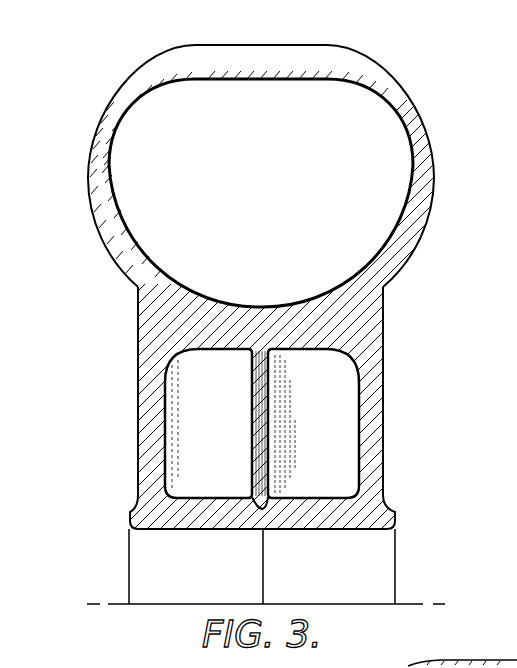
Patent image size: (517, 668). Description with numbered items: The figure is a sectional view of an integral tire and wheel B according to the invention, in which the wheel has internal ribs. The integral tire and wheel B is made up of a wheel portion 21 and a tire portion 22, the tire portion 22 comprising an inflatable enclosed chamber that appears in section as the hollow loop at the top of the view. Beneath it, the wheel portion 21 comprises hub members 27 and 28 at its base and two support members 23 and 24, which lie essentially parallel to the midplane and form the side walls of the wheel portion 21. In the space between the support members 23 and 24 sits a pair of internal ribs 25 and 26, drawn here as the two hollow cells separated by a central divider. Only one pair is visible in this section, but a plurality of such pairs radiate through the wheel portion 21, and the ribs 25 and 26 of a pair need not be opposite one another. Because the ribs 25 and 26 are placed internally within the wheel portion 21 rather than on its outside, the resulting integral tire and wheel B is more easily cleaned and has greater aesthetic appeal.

The wheel portion 21 is at (386, 326).
The tire portion 22 is at (112, 121).
The integral tire and wheel B is at (407, 90).
The support member 23 is at (151, 399).
The support member 24 is at (372, 401).
The internal rib 25 is at (224, 439).
The internal rib 26 is at (332, 439).
The hub member 27 is at (142, 515).
The hub member 28 is at (396, 518).